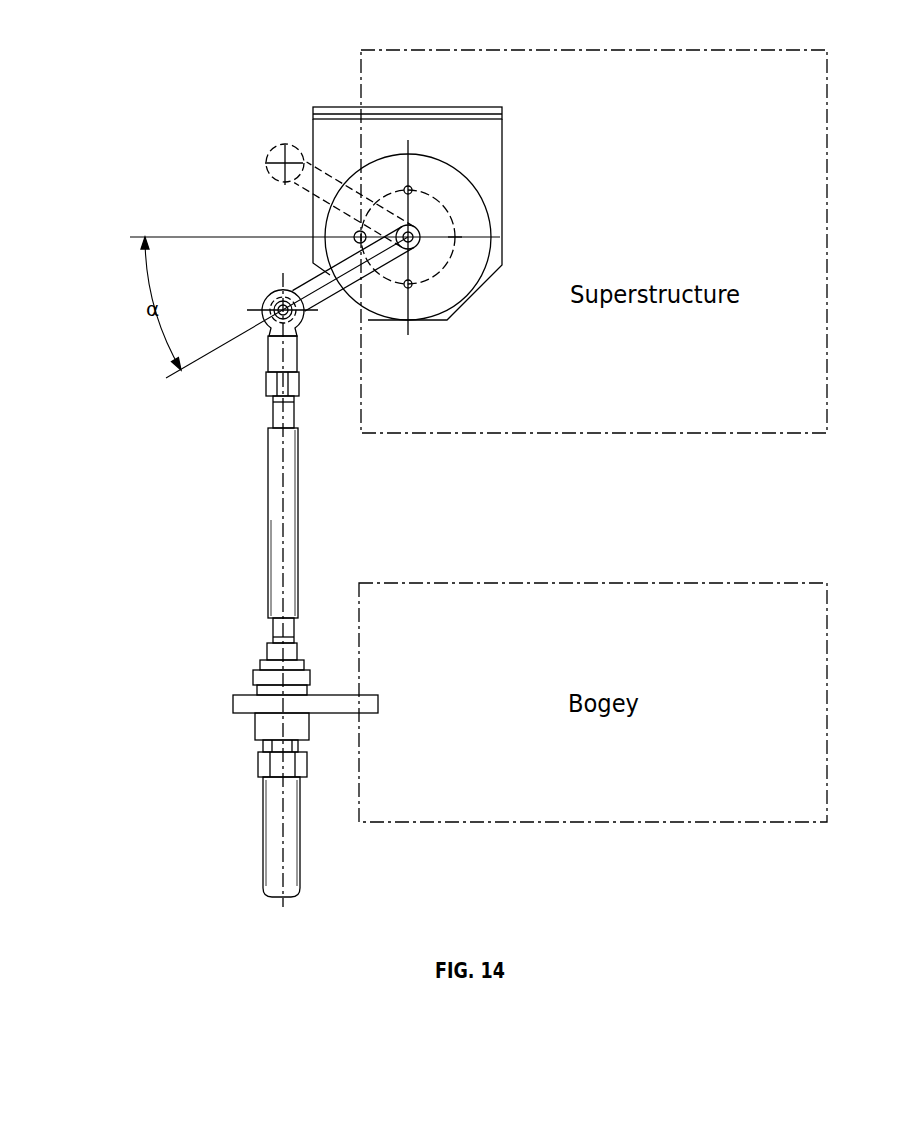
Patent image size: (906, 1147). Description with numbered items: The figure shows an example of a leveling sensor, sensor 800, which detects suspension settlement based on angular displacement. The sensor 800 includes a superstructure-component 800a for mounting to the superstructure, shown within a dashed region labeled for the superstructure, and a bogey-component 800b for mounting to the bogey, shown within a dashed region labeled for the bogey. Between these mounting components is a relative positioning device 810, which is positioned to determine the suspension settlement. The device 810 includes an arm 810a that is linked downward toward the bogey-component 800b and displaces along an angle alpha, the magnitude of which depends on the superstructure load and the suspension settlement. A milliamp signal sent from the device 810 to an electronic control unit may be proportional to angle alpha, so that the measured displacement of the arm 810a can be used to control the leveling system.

The sensor 800 is at (147, 95).
The superstructure-component 800a is at (477, 109).
The bogey-component 800b is at (367, 705).
The relative positioning device 810 is at (557, 187).
The arm 810a is at (320, 300).